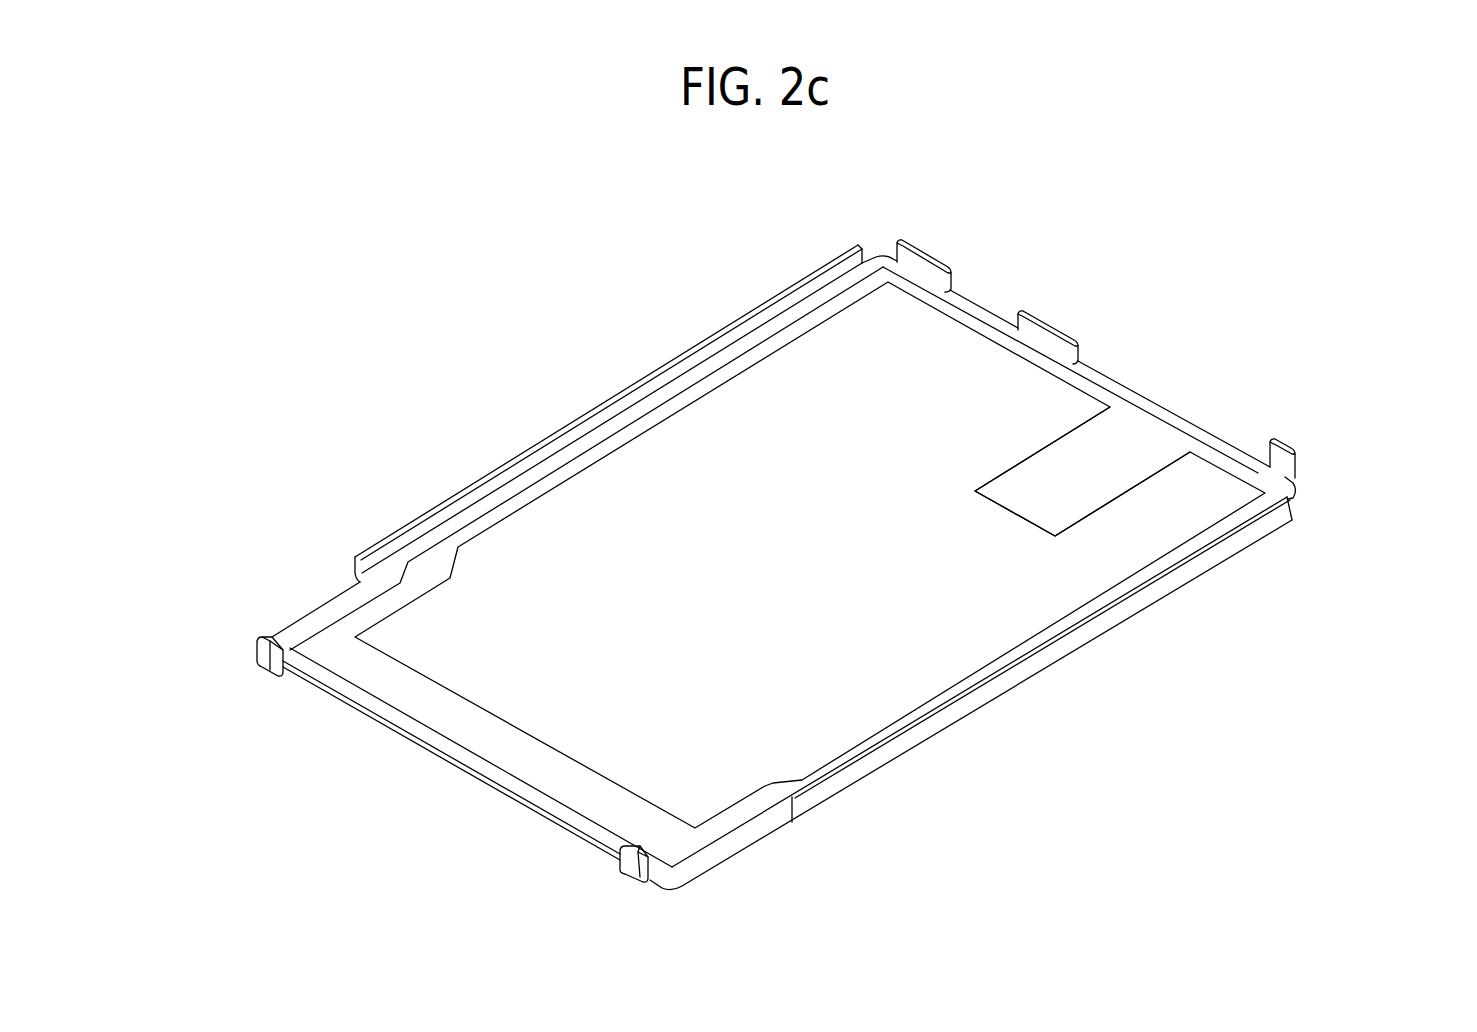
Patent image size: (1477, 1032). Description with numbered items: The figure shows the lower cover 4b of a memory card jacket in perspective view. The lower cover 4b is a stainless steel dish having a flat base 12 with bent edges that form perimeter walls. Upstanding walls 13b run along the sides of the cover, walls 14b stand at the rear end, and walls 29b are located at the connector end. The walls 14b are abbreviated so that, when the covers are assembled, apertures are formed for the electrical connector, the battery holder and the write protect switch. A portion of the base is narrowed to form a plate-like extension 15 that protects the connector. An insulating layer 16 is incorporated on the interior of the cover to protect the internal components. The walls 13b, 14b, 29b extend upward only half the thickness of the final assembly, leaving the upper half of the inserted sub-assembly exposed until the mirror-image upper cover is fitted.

The lower cover 4b is at (453, 383).
The flat base 12 is at (1122, 450).
The upstanding walls 13b is at (650, 378).
The walls at the rear end 14b is at (932, 252).
The plate-like extension 15 is at (487, 745).
The insulating layer 16 is at (915, 648).
The walls at the connector end 29b is at (255, 655).